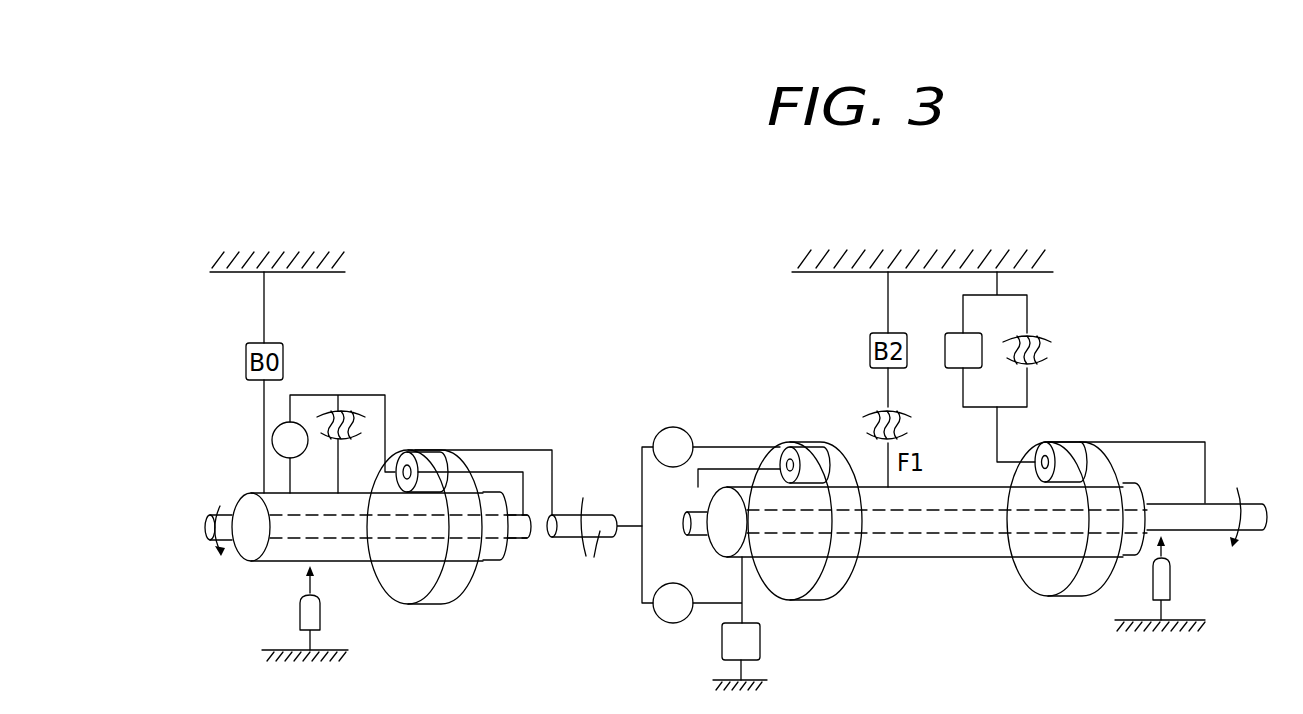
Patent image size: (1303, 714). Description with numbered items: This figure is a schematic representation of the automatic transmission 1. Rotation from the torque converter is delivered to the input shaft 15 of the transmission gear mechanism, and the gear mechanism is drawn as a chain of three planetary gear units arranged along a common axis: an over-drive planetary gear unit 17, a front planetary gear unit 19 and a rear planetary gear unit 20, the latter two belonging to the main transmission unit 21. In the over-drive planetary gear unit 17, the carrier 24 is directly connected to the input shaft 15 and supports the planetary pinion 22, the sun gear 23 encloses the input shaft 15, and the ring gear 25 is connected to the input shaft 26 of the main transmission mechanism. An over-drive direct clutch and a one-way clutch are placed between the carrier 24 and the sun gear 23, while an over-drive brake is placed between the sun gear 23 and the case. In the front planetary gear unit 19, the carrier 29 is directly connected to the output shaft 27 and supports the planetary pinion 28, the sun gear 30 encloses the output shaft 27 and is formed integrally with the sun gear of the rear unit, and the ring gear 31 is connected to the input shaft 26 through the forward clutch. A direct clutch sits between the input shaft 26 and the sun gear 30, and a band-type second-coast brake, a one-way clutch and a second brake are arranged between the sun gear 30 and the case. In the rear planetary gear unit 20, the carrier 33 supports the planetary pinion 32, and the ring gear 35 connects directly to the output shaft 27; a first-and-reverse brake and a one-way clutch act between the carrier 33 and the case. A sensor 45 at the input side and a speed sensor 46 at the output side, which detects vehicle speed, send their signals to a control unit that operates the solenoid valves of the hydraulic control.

The automatic transmission 1 is at (665, 250).
The input shaft 15 is at (235, 525).
The over-drive planetary gear unit 17 is at (457, 440).
The front planetary gear unit 19 is at (820, 425).
The rear planetary gear unit 20 is at (1086, 408).
The main transmission unit 21 is at (798, 397).
The planetary pinion 22 is at (410, 450).
The sun gear 23 is at (345, 563).
The carrier 24 is at (372, 395).
The ring gear 25 is at (462, 585).
The input shaft 26 is at (594, 544).
The output shaft 27 is at (1197, 530).
The planetary pinion 28 is at (783, 452).
The carrier 29 is at (737, 468).
The sun gear 30 is at (945, 557).
The ring gear 31 is at (825, 590).
The planetary pinion 32 is at (1046, 444).
The carrier 33 is at (995, 438).
The ring gear 35 is at (1107, 443).
The sensor 45 is at (300, 622).
The speed sensor 46 is at (1153, 585).